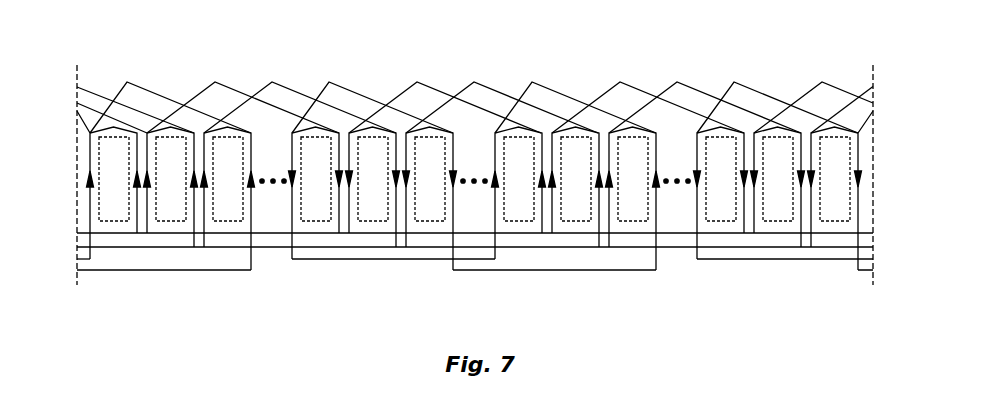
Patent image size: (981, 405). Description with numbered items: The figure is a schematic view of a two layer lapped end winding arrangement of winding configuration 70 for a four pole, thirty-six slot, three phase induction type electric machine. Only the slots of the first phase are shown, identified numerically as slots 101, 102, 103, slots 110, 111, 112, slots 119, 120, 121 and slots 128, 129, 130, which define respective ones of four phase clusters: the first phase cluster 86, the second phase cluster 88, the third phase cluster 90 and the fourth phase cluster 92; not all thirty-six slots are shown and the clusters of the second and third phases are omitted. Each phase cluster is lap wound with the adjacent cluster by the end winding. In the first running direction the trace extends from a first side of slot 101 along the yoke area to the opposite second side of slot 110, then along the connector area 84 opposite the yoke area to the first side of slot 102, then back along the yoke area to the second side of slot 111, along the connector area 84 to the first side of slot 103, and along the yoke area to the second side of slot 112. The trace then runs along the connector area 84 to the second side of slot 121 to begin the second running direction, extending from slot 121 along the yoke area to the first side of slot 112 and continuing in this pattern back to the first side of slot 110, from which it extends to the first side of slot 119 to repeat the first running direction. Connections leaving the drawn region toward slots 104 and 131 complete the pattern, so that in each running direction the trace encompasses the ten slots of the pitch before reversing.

The winding configuration 70 is at (552, 50).
The connector area 84 is at (491, 300).
The first phase cluster 86 is at (161, 283).
The second phase cluster 88 is at (385, 279).
The third phase cluster 90 is at (560, 287).
The fourth phase cluster 92 is at (785, 285).
The slot 101 is at (495, 200).
The slot 102 is at (539, 168).
The slot 103 is at (567, 172).
The slot 104 is at (895, 190).
The slot 110 is at (316, 193).
The slot 111 is at (373, 187).
The slot 112 is at (430, 198).
The slot 119 is at (519, 193).
The slot 120 is at (576, 187).
The slot 121 is at (633, 198).
The slot 128 is at (398, 185).
The slot 129 is at (427, 161).
The slot 130 is at (439, 177).
The slot 131 is at (134, 270).